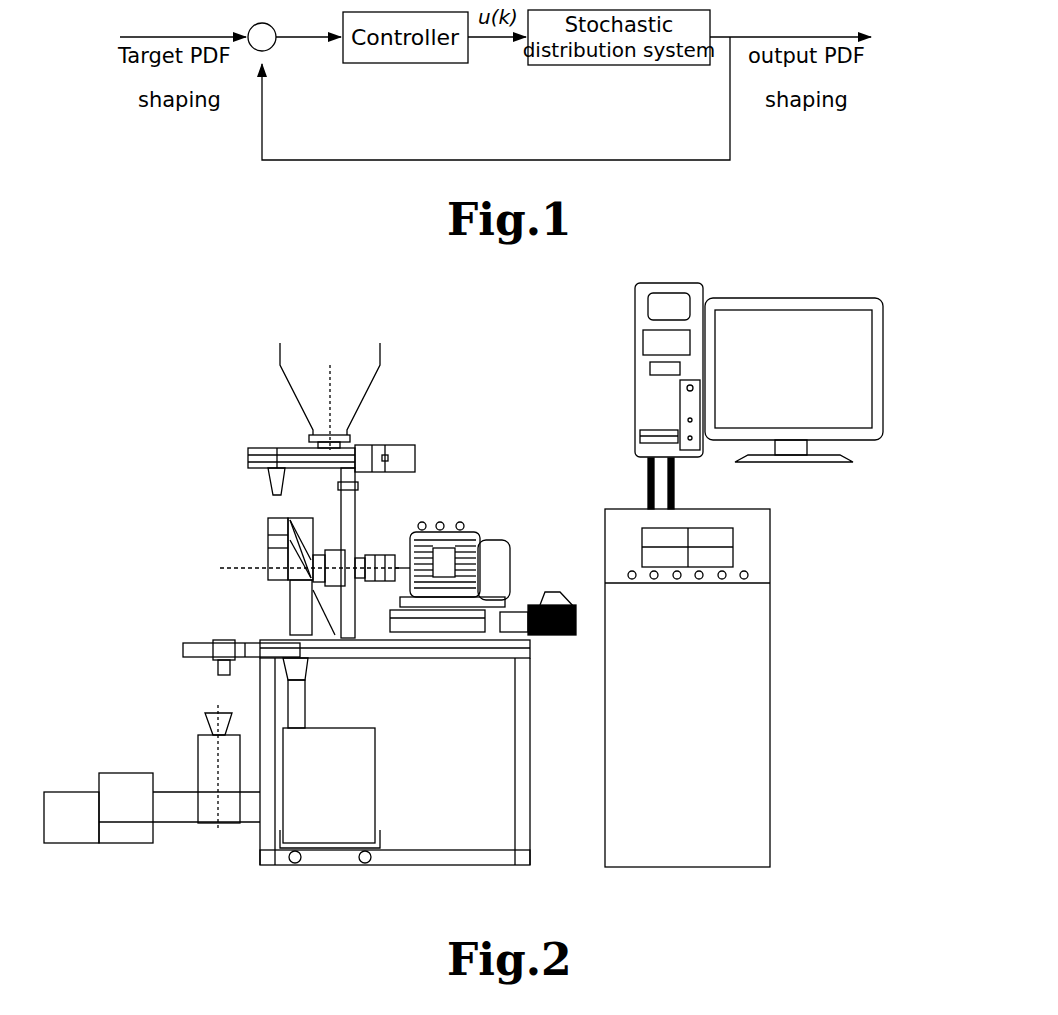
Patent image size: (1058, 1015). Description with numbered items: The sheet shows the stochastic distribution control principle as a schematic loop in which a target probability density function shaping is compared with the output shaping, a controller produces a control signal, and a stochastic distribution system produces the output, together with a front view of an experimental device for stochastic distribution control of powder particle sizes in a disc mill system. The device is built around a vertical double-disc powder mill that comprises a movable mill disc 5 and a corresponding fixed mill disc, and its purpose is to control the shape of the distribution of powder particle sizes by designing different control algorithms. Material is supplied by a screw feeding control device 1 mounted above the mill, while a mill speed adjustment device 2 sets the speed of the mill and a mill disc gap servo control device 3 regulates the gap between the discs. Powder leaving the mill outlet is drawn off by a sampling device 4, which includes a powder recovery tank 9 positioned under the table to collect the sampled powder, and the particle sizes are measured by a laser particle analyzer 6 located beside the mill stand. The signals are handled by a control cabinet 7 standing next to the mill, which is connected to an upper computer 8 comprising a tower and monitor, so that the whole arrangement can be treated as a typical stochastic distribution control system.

The screw feeding control device 1 is at (351, 505).
The mill speed adjustment device 2 is at (455, 540).
The mill disc gap servo control device 3 is at (501, 648).
The sampling device 4 is at (202, 617).
The movable mill disc 5 is at (287, 545).
The laser particle analyzer 6 is at (152, 760).
The control cabinet 7 is at (717, 662).
The upper computer 8 is at (792, 372).
The powder recovery tank 9 is at (380, 760).